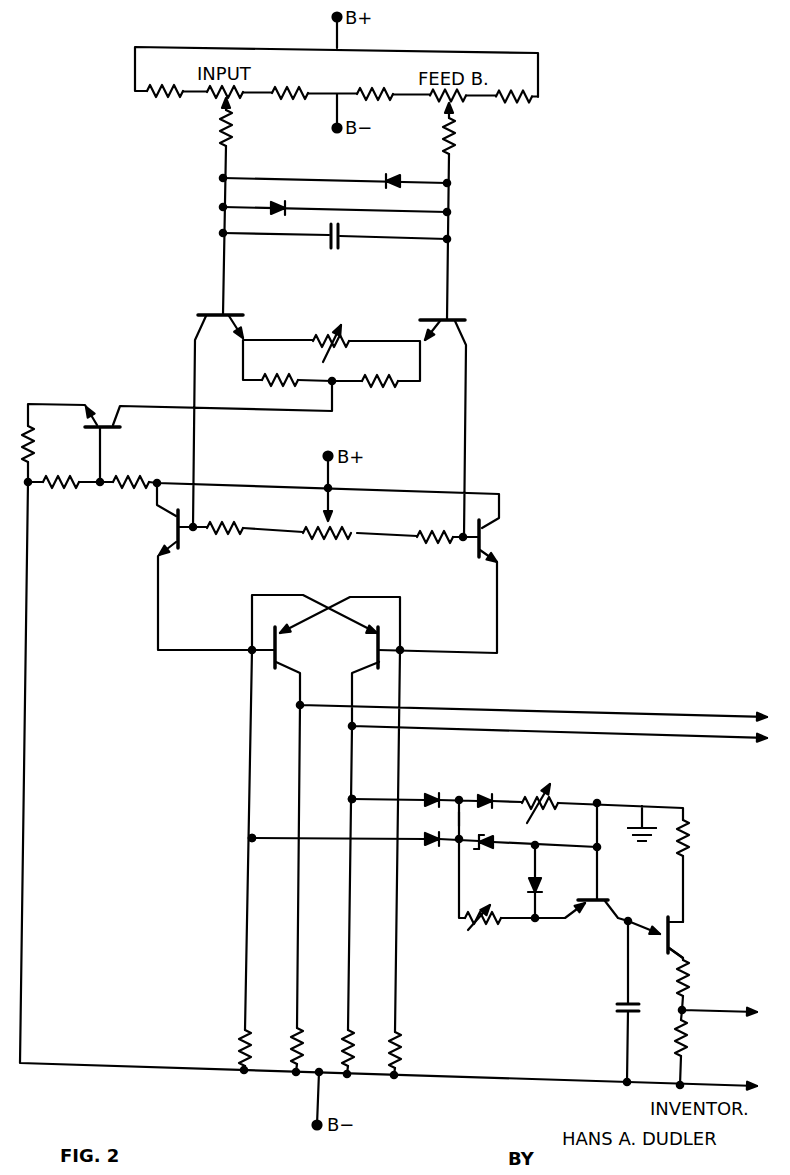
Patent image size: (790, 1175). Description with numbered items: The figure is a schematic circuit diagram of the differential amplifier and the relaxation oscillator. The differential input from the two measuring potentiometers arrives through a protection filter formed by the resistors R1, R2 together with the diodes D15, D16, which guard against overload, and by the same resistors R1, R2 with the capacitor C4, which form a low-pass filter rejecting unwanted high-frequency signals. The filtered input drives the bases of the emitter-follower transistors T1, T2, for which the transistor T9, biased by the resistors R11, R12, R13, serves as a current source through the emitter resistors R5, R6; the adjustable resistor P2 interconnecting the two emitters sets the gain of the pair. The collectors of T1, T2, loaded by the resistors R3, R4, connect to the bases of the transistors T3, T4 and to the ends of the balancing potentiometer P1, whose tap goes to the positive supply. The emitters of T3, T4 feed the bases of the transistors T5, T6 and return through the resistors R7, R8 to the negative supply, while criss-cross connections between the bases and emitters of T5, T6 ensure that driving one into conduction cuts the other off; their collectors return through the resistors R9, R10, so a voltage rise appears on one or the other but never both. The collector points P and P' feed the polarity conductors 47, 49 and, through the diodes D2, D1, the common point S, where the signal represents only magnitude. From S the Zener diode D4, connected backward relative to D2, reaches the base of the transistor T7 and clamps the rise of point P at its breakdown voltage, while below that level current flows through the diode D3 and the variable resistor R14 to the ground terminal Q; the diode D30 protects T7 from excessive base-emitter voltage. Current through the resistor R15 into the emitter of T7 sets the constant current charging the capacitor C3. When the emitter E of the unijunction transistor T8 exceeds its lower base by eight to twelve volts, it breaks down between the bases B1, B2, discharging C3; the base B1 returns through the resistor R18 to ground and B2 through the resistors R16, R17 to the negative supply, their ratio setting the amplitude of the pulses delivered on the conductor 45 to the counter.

The resistor R1 is at (211, 128).
The resistor R2 is at (462, 136).
The diode D15 is at (390, 170).
The diode D16 is at (280, 199).
The capacitor C4 is at (348, 230).
The transistor T1 is at (218, 314).
The transistor T2 is at (447, 315).
The resistor P2 is at (328, 338).
The resistor R5 is at (280, 369).
The resistor R6 is at (380, 370).
The transistor T9 is at (101, 405).
The resistor R11 is at (47, 444).
The resistor R12 is at (61, 494).
The resistor R13 is at (131, 472).
The resistor R3 is at (225, 517).
The potentiometer P1 is at (327, 545).
The resistor R4 is at (435, 524).
The transistor T3 is at (158, 534).
The transistor T4 is at (496, 542).
The transistor T5 is at (292, 646).
The transistor T6 is at (361, 647).
The conductor 47 is at (626, 712).
The conductor 49 is at (673, 738).
The point P' is at (343, 798).
The point P is at (271, 838).
The diode D1 is at (432, 790).
The diode D3 is at (482, 791).
The diode D2 is at (432, 853).
The Zener diode D4 is at (482, 855).
The point S is at (459, 822).
The variable resistor R14 is at (556, 799).
The ground Q is at (642, 804).
The resistor R18 is at (703, 838).
The diode D30 is at (555, 876).
The resistor R15 is at (492, 926).
The transistor T7 is at (599, 896).
The emitter terminal E is at (657, 919).
The avalanche breakdown transistor T8 is at (683, 935).
The base electrode B1 is at (683, 917).
The base electrode B2 is at (684, 954).
The resistor R17 is at (664, 978).
The capacitor C3 is at (611, 1006).
The resistor R16 is at (663, 1038).
The conductor 45 is at (712, 1013).
The resistor R7 is at (240, 1062).
The resistor R9 is at (292, 1062).
The resistor R10 is at (342, 1064).
The resistor R8 is at (392, 1065).